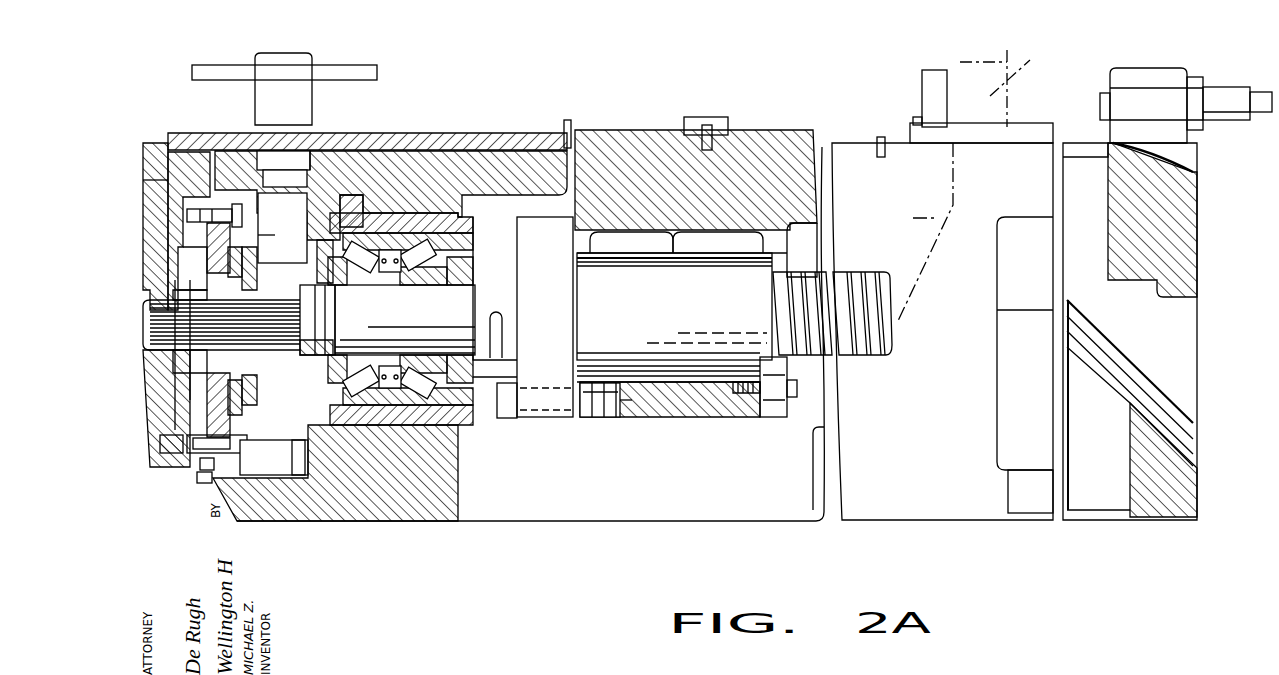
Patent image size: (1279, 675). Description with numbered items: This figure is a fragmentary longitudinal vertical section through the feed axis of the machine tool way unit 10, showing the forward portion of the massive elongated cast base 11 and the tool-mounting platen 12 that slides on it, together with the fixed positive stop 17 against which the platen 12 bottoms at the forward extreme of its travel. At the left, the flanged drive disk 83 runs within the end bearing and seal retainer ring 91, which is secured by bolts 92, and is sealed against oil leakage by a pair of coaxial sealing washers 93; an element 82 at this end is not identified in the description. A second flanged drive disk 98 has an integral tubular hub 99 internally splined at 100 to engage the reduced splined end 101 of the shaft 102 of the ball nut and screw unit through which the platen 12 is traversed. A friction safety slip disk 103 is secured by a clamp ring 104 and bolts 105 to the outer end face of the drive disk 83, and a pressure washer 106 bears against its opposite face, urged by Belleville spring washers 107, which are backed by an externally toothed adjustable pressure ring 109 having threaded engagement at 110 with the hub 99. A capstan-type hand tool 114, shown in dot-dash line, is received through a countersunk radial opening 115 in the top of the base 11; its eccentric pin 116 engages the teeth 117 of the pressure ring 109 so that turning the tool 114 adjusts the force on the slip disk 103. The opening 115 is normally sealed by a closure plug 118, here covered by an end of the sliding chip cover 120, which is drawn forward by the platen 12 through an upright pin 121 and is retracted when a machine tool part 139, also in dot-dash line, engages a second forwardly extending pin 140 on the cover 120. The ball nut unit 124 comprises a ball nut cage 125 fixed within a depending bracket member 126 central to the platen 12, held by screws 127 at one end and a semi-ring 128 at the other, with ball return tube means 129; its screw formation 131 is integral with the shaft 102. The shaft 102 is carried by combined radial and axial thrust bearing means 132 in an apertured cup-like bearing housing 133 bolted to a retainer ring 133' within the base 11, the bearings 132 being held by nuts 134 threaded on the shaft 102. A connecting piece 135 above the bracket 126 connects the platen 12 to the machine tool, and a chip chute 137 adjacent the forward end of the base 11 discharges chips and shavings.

The machine tool way unit 10 is at (618, 535).
The base 11 is at (498, 168).
The tool-mounting platen 12 is at (759, 150).
The fixed positive stop 17 is at (1102, 93).
The splined input shaft 82 is at (221, 325).
The flanged drive disk 83 is at (166, 185).
The end bearing and seal retainer ring 91 is at (210, 467).
The bolts 92 is at (198, 478).
The sealing washers 93 is at (172, 200).
The second flanged drive disk 98 is at (215, 383).
The tubular axial hub 99 is at (230, 360).
The internal spline 100 is at (273, 290).
The reduced splined end 101 is at (300, 318).
The shaft 102 is at (268, 388).
The friction safety slip disk 103 is at (257, 188).
The clamp ring 104 is at (285, 179).
The bolts 105 is at (243, 220).
The pressure ring 106 is at (247, 430).
The Belleville spring disks 107 is at (238, 252).
The adjustable pressure ring 109 is at (270, 273).
The external threaded engagement 110 is at (255, 412).
The capstan-type hand tool 114 is at (312, 112).
The countersunk radial opening 115 is at (318, 137).
The eccentric pin 116 is at (276, 240).
The teeth 117 is at (262, 395).
The closure plug 118 is at (262, 156).
The sliding chip cover 120 is at (453, 139).
The upright pin 121 is at (571, 123).
The ball nut unit 124 is at (690, 388).
The ball nut cage 125 is at (674, 317).
The depending bracket member 126 is at (633, 407).
The bolts 127 is at (595, 398).
The semi-ring 128 is at (773, 412).
The ball return tube means 129 is at (688, 247).
The screw formation 131 is at (892, 376).
The combined radial and axial thrust bearing means 132 is at (462, 440).
The bearing housing 133 is at (516, 334).
The retainer ring 133' is at (290, 457).
The nuts 134 is at (320, 348).
The connecting piece 135 is at (718, 123).
The chip chute 137 is at (1183, 371).
The machine tool part 139 is at (994, 88).
The second forwardly extending pin 140 is at (915, 120).